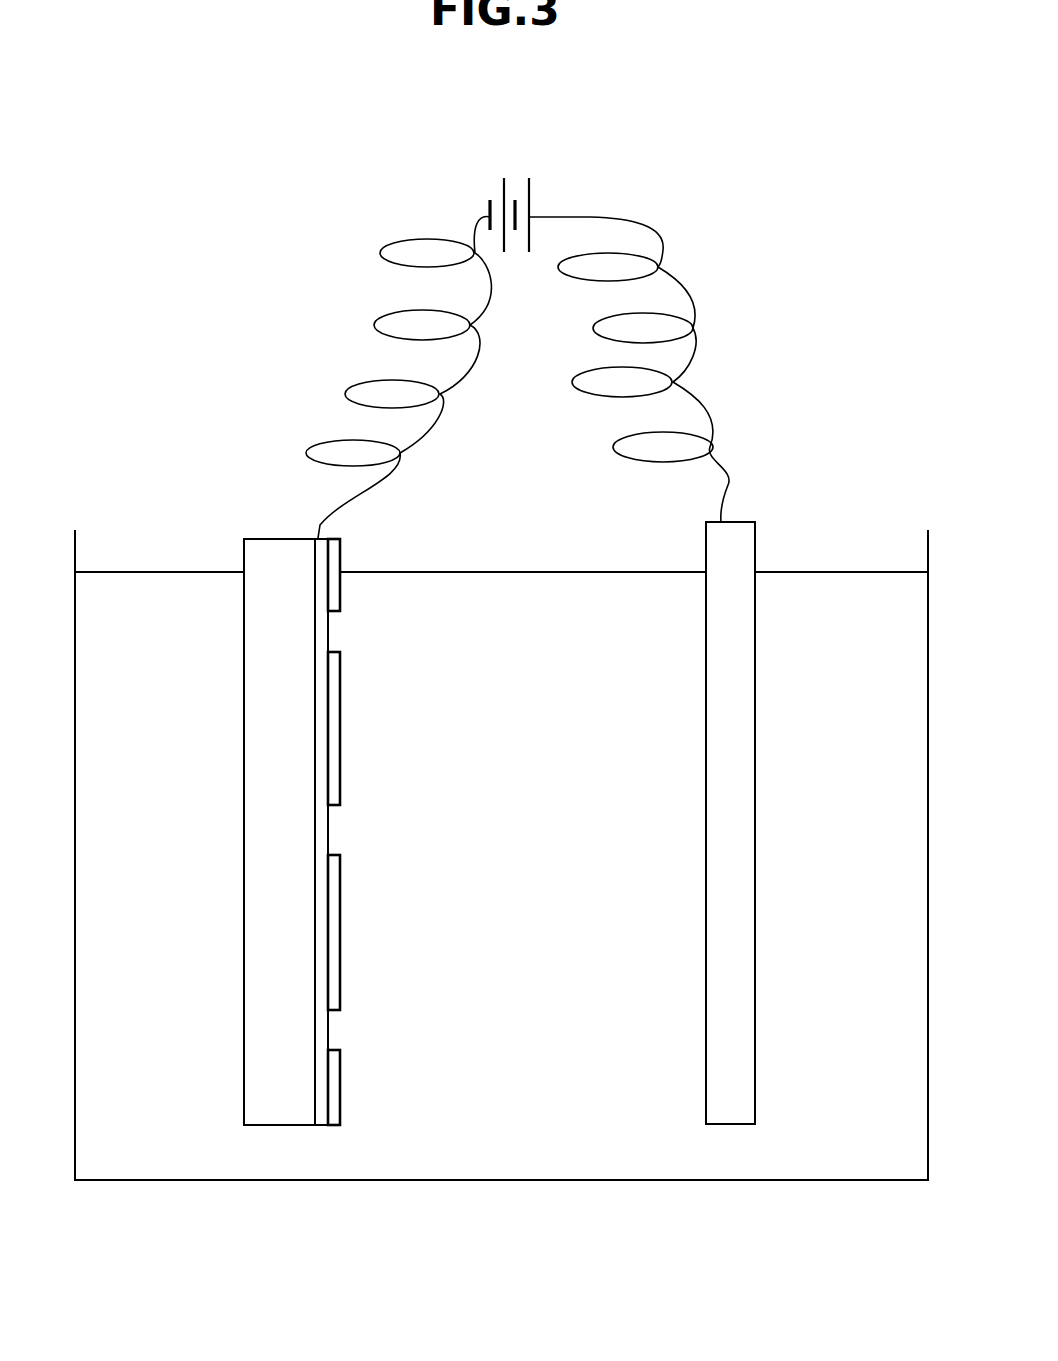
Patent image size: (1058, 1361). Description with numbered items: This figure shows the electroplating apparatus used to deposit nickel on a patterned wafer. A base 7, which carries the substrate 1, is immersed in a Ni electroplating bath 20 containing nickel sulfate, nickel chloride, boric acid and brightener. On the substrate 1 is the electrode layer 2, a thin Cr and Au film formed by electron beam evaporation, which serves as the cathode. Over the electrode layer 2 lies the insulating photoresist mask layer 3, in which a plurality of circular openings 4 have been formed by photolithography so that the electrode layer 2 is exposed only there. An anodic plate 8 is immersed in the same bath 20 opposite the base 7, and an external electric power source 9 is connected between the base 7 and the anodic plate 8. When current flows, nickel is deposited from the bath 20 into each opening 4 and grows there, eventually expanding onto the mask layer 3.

The substrate 1 is at (270, 1118).
The electrode layer 2 is at (320, 1118).
The mask layer 3 is at (337, 1073).
The opening 4 is at (333, 833).
The base 7 is at (346, 845).
The anodic plate 8 is at (743, 552).
The external electric power source 9 is at (490, 203).
The Ni electroplating bath 20 is at (863, 1117).